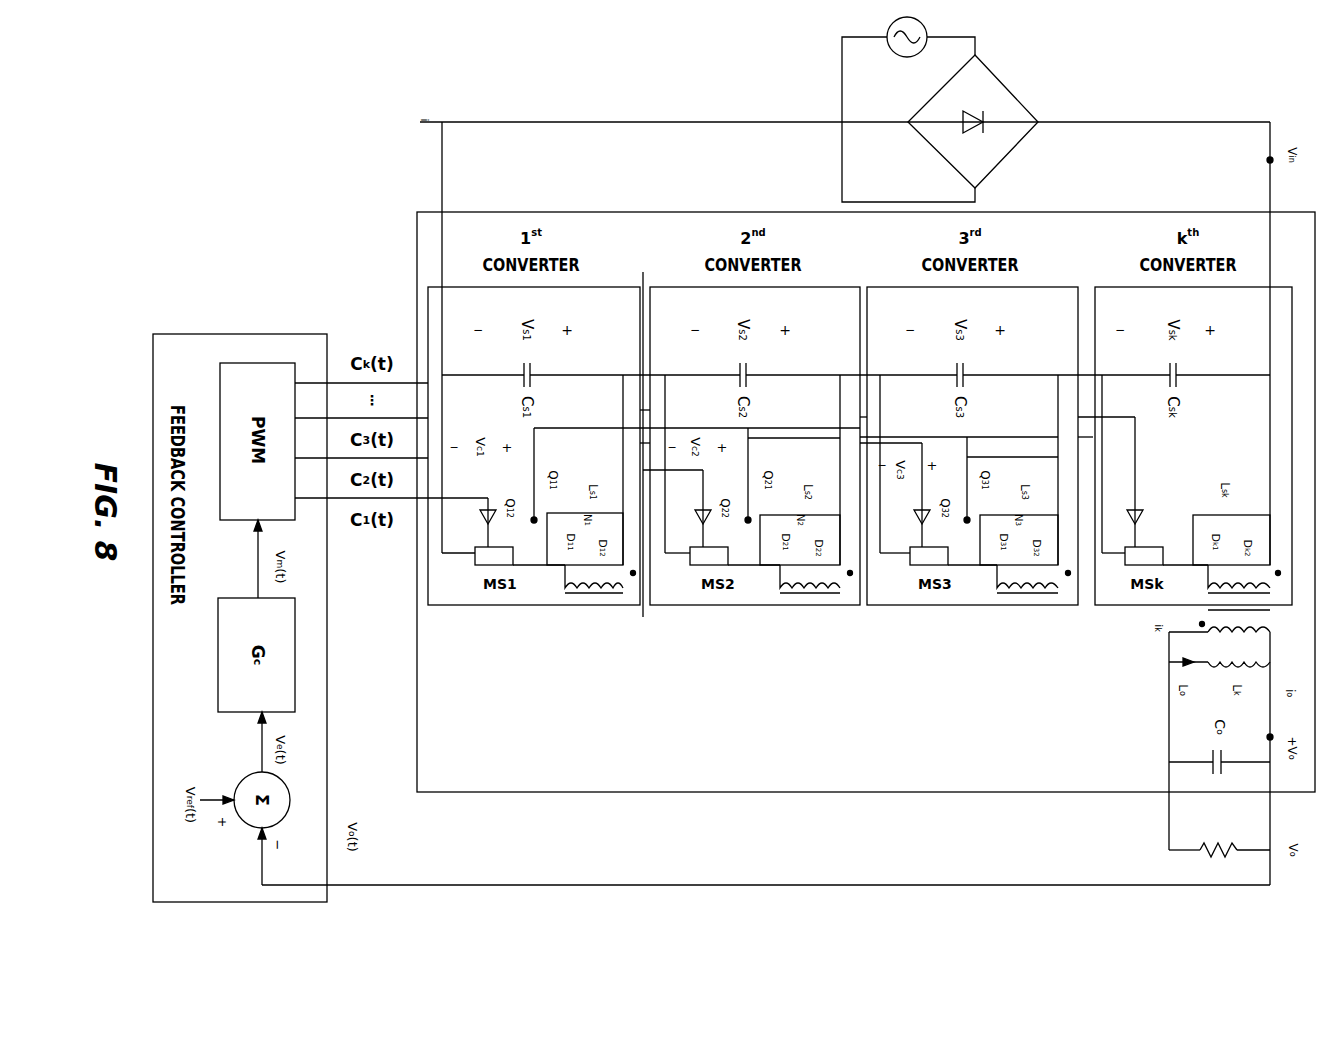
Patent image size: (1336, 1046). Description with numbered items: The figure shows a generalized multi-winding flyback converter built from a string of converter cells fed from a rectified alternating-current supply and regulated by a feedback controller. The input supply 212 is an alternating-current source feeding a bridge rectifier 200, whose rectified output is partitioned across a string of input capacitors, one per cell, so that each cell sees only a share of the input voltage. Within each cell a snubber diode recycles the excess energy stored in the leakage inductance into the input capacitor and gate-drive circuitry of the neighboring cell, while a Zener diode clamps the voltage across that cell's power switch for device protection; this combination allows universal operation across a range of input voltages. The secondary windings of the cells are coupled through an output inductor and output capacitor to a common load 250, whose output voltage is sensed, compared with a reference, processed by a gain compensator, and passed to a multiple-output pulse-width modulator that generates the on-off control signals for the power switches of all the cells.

The rectifier 200 is at (977, 121).
The AC source 212 is at (908, 109).
The load 250 is at (1200, 845).